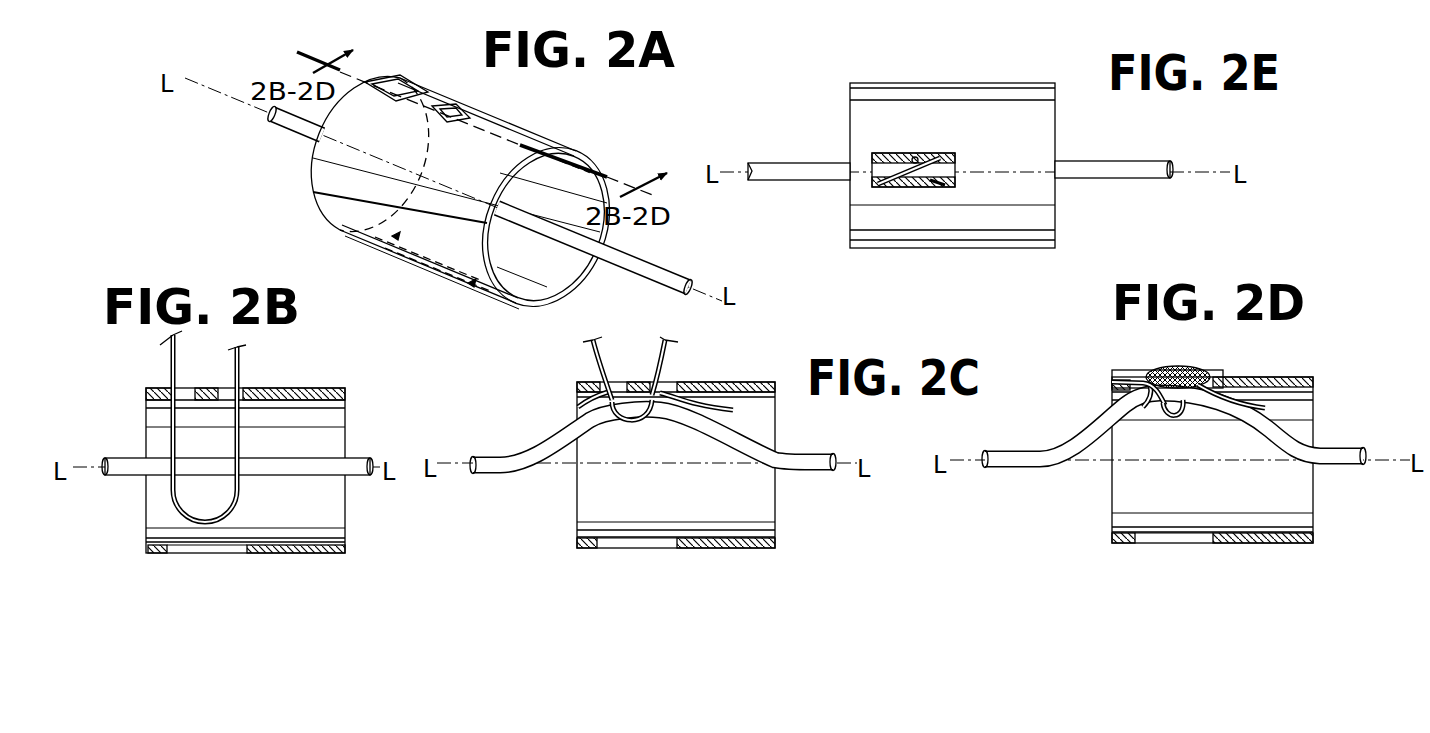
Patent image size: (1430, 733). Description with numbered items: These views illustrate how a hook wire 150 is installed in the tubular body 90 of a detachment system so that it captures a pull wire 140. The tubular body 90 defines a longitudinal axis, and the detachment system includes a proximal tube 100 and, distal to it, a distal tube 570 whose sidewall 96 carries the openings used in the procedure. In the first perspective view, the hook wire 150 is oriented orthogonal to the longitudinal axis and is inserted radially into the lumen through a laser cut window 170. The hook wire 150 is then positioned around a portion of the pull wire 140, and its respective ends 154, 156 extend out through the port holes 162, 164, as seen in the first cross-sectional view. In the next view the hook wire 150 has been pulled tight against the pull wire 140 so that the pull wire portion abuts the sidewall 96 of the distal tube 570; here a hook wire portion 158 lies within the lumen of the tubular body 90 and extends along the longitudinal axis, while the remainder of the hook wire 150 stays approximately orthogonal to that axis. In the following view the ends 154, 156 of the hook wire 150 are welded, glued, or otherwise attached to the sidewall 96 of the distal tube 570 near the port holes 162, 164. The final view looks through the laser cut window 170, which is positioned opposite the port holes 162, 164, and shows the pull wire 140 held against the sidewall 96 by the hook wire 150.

In FIG. 2A, the tubular body 90 is at (577, 130).
In FIG. 2B, the tubular body 90 is at (350, 521).
In FIG. 2C, the tubular body 90 is at (754, 377).
In FIG. 2D, the tubular body 90 is at (1320, 387).
In FIG. 2A, the sidewall 96 is at (320, 207).
In FIG. 2B, the sidewall 96 is at (146, 406).
In FIG. 2C, the sidewall 96 is at (676, 389).
In FIG. 2D, the sidewall 96 is at (1212, 388).
In FIG. 2E, the sidewall 96 is at (848, 123).
In FIG. 2A, the proximal tube 100 is at (490, 296).
In FIG. 2B, the proximal tube 100 is at (328, 388).
In FIG. 2C, the proximal tube 100 is at (758, 540).
In FIG. 2D, the proximal tube 100 is at (1295, 538).
In FIG. 2E, the proximal tube 100 is at (1043, 238).
In FIG. 2A, the pull wire 140 is at (625, 265).
In FIG. 2B, the pull wire 140 is at (138, 478).
In FIG. 2C, the pull wire 140 is at (497, 474).
In FIG. 2D, the pull wire 140 is at (1027, 463).
In FIG. 2E, the pull wire 140 is at (1122, 167).
In FIG. 2B, the hook wire 150 is at (163, 352).
In FIG. 2C, the hook wire 150 is at (642, 397).
In FIG. 2D, the hook wire 150 is at (1172, 414).
In FIG. 2E, the hook wire 150 is at (894, 176).
In FIG. 2D, the hook wire end 154 is at (1143, 408).
In FIG. 2E, the hook wire end 154 is at (875, 163).
In FIG. 2D, the hook wire end 156 is at (1263, 408).
In FIG. 2E, the hook wire end 156 is at (935, 183).
In FIG. 2B, the hook wire portion 158 is at (228, 520).
In FIG. 2C, the hook wire portion 158 is at (630, 418).
In FIG. 2D, the hook wire portion 158 is at (1170, 408).
In FIG. 2A, the port hole 162 is at (463, 124).
In FIG. 2B, the port hole 162 is at (243, 398).
In FIG. 2C, the port hole 162 is at (697, 407).
In FIG. 2D, the port hole 162 is at (1203, 380).
In FIG. 2A, the port hole 164 is at (416, 80).
In FIG. 2B, the port hole 164 is at (187, 396).
In FIG. 2C, the port hole 164 is at (600, 382).
In FIG. 2D, the port hole 164 is at (1113, 382).
In FIG. 2A, the laser cut window 170 is at (418, 268).
In FIG. 2B, the laser cut window 170 is at (217, 552).
In FIG. 2C, the laser cut window 170 is at (660, 540).
In FIG. 2D, the laser cut window 170 is at (1165, 540).
In FIG. 2E, the laser cut window 170 is at (955, 173).
In FIG. 2A, the distal tube 570 is at (320, 157).
In FIG. 2B, the distal tube 570 is at (335, 417).
In FIG. 2C, the distal tube 570 is at (767, 507).
In FIG. 2D, the distal tube 570 is at (1300, 507).
In FIG. 2E, the distal tube 570 is at (947, 237).